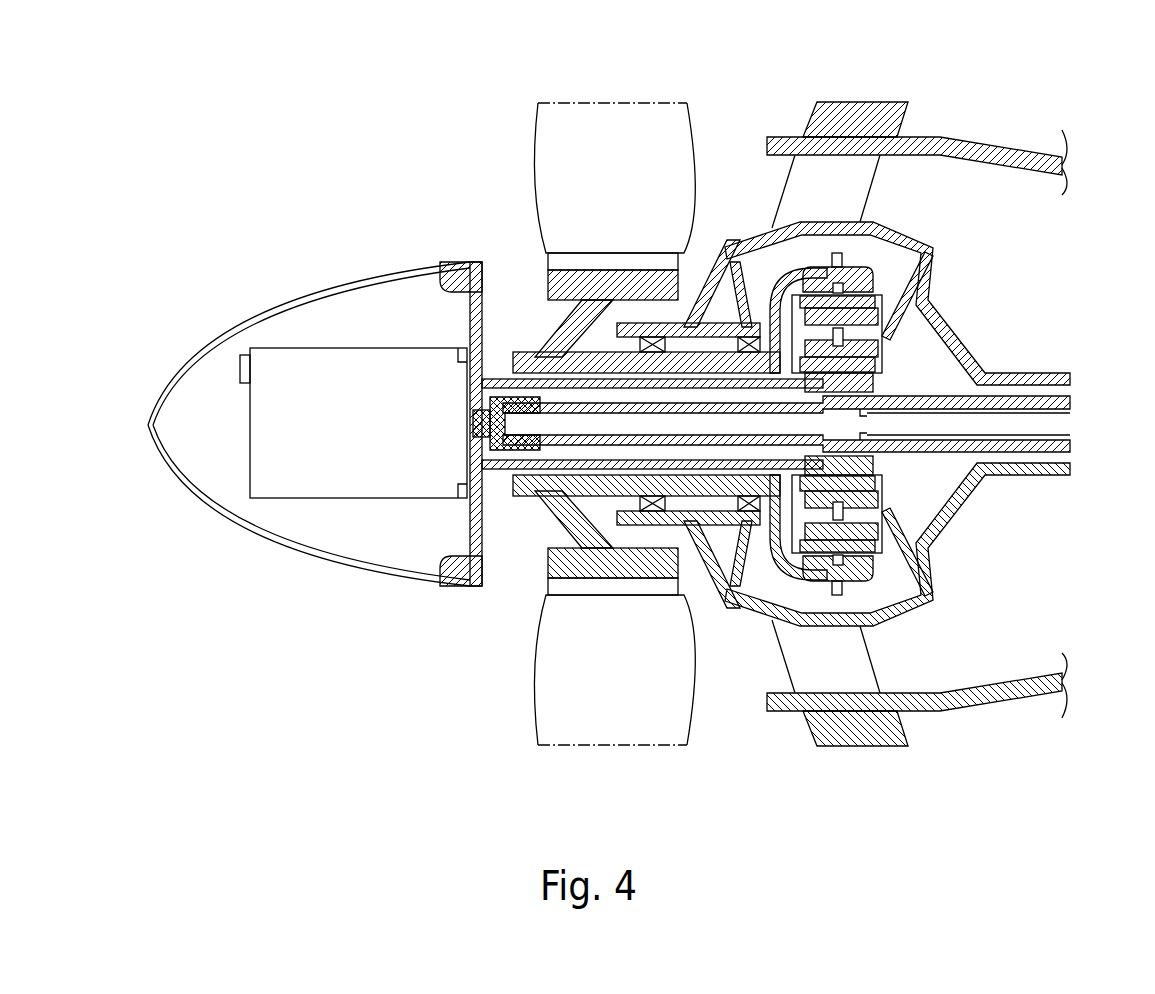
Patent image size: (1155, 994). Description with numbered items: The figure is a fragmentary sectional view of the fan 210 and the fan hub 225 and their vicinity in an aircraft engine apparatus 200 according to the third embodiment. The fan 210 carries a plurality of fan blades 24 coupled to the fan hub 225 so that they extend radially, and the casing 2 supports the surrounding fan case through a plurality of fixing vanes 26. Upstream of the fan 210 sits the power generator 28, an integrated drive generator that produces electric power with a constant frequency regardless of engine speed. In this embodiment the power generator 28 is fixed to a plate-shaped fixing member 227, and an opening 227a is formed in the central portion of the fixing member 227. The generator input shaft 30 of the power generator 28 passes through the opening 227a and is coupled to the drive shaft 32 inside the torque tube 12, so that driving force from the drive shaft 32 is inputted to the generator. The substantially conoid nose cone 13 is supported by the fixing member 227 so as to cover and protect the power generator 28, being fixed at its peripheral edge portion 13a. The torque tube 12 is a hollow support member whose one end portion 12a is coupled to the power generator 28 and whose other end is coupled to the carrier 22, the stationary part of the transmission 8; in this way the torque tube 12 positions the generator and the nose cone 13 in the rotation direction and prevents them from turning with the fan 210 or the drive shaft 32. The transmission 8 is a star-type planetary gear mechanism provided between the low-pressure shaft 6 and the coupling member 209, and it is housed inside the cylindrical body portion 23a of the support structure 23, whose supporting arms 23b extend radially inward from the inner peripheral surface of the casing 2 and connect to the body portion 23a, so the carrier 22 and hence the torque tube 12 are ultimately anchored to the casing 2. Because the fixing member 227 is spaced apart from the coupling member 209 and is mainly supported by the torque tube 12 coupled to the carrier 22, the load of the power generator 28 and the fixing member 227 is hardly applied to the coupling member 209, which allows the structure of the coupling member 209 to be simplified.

The engine apparatus 200 is at (133, 228).
The nose cone 13 is at (193, 360).
The peripheral edge portion 13a is at (468, 262).
The power generator 28 is at (297, 345).
The opening 227a is at (470, 400).
The fixing member 227 is at (492, 575).
The torque tube 12 is at (520, 545).
The one end portion 12a is at (507, 345).
The fan hub 225 is at (552, 355).
The fan 210 is at (512, 165).
The fan blades 24 is at (700, 140).
The coupling member 209 is at (707, 575).
The generator input shaft 30 is at (528, 440).
The drive shaft 32 is at (703, 403).
The transmission 8 is at (858, 262).
The carrier 22 is at (880, 497).
The support structure 23 is at (965, 600).
The body portion 23a is at (890, 620).
The supporting arms 23b is at (877, 665).
The low-pressure shaft 6 is at (923, 397).
The casing 2 is at (957, 130).
The fixing vanes 26 is at (907, 732).